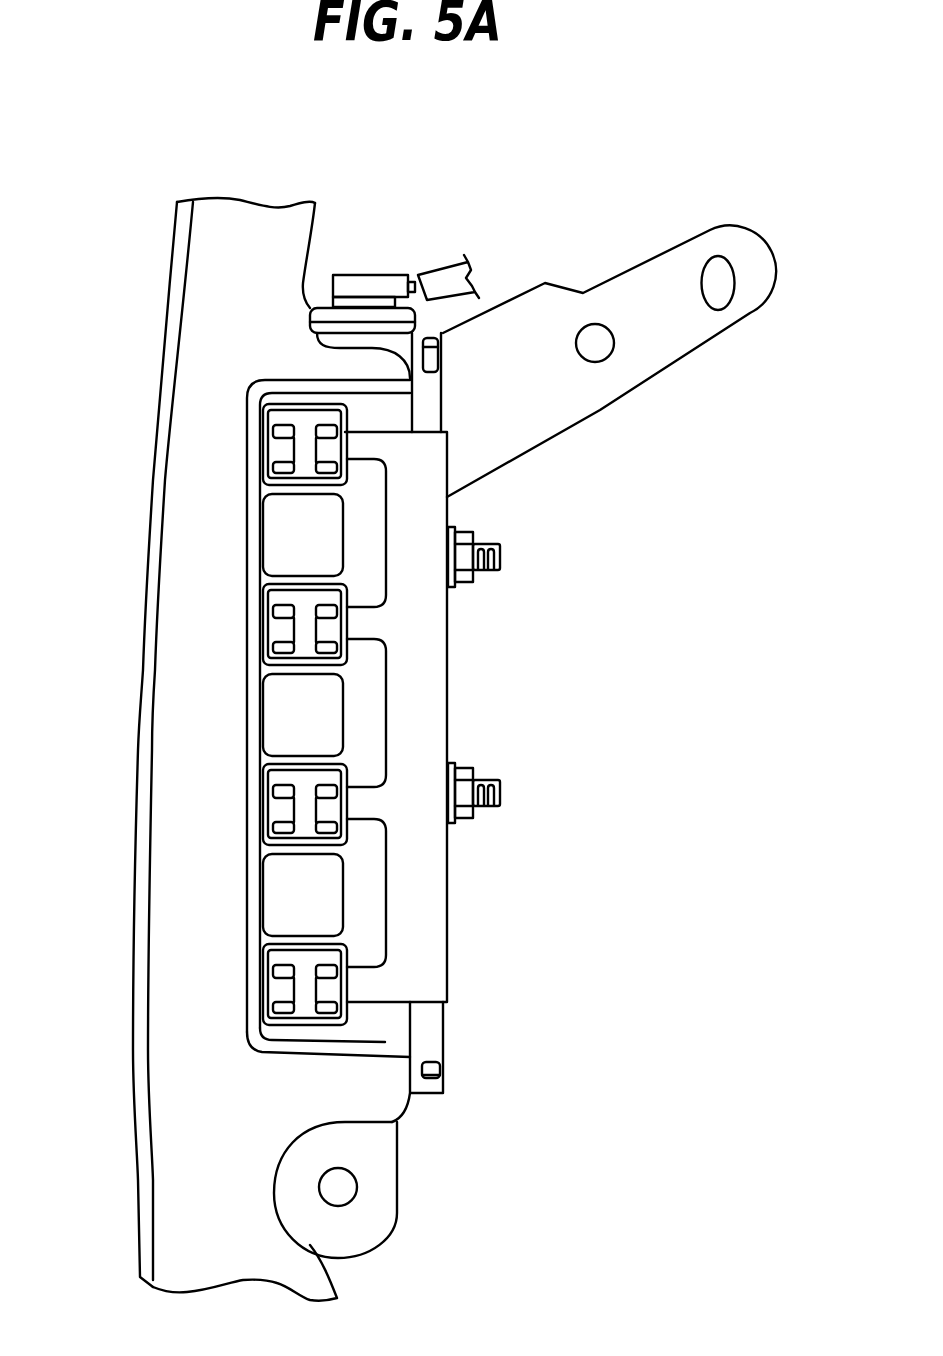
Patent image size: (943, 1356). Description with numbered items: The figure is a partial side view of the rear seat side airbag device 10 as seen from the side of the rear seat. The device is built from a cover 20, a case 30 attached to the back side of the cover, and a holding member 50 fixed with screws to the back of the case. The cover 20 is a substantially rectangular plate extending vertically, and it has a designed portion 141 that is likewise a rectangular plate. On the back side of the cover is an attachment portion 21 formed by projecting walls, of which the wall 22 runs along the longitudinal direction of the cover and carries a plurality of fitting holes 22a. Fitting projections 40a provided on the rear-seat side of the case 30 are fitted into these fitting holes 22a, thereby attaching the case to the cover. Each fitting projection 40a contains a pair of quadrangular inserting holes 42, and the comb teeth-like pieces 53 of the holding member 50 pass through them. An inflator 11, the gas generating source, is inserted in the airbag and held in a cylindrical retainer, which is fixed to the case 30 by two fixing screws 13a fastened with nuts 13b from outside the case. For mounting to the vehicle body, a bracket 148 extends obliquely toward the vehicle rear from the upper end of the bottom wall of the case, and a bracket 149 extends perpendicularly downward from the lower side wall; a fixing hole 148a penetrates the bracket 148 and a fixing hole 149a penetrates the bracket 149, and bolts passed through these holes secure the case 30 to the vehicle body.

The rear seat side airbag device 10 is at (500, 724).
The inflator 11 is at (325, 293).
The fixing screw 13a is at (500, 558).
The nut 13b is at (470, 533).
The cover 20 is at (192, 749).
The attachment portion 21 is at (417, 1023).
The wall 22 is at (335, 695).
The fitting hole 22a is at (300, 481).
The case 30 is at (428, 1094).
The fitting projection 40a is at (262, 467).
The inserting hole 42 is at (302, 425).
The holding member 50 is at (448, 667).
The comb teeth-like piece 53 is at (269, 676).
The designed portion 141 is at (150, 519).
The bracket 148 is at (634, 361).
The fixing hole 148a is at (613, 347).
The bracket 149 is at (383, 1217).
The fixing hole 149a is at (343, 1207).